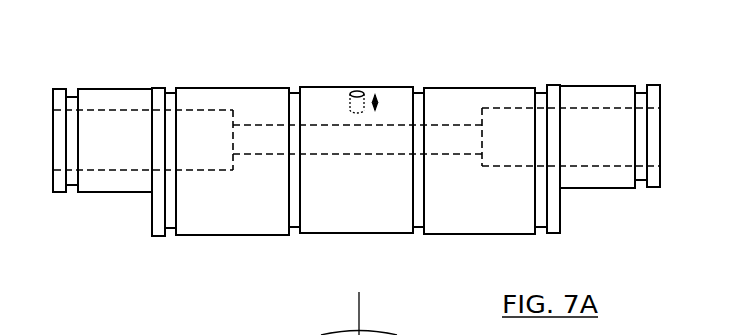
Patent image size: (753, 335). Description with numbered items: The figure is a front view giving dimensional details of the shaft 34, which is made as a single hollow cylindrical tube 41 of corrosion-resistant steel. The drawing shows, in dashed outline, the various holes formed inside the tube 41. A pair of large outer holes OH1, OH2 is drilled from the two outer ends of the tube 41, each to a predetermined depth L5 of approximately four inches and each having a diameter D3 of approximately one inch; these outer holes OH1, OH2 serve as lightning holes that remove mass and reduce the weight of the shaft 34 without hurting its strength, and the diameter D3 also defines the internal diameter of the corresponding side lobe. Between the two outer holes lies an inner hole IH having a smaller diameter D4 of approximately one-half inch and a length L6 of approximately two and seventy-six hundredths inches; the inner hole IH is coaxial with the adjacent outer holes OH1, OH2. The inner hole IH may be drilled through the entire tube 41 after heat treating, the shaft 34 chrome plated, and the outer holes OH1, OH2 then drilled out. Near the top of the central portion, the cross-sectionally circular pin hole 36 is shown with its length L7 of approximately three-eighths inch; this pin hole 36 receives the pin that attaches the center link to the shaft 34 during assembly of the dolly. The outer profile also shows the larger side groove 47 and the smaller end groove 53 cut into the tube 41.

The shaft 34 is at (662, 265).
The tube 41 is at (379, 220).
The end groove 53 is at (213, 334).
The side groove 47 is at (225, 334).
The pin hole 36 is at (357, 91).
The length of pin hole L7 is at (386, 102).
The first outer hole OH1 is at (113, 110).
The second outer hole OH2 is at (577, 150).
The inner hole IH is at (335, 145).
The diameter of outer hole D3 is at (33, 75).
The diameter of inner hole D4 is at (262, 97).
The depth of outer hole L5 is at (482, 98).
The length of inner hole L6 is at (232, 167).